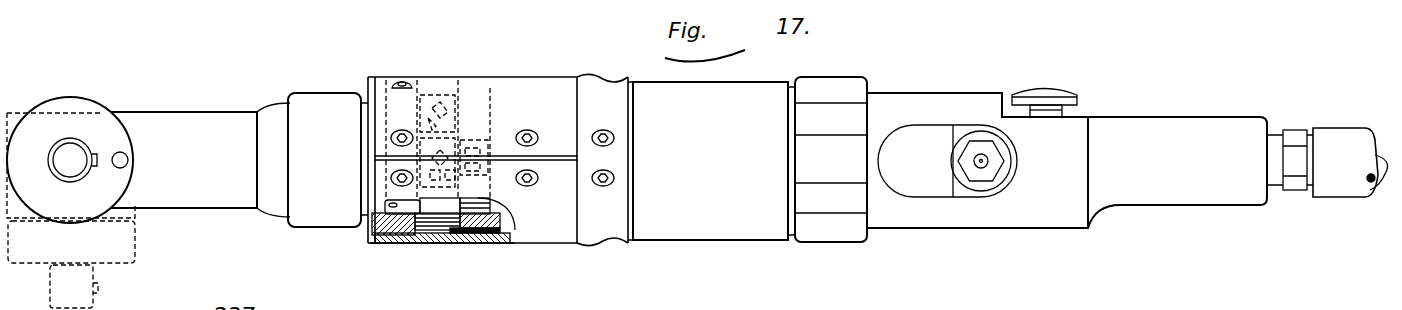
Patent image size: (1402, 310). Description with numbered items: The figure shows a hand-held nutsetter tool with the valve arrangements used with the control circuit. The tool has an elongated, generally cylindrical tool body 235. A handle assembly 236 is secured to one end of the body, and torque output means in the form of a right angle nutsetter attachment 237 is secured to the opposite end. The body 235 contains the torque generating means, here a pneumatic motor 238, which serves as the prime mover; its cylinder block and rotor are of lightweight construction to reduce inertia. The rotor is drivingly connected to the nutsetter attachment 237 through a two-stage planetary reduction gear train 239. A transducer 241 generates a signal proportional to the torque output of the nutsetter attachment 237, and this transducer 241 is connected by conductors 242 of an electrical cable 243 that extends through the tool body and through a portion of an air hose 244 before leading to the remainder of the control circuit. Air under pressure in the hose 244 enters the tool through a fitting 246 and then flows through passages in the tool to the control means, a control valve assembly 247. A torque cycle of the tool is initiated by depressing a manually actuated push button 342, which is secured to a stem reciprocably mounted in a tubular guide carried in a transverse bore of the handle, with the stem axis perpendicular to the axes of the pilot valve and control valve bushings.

The right angle nutsetter attachment 237 is at (169, 108).
The two-stage planetary reduction gear train 239 is at (388, 246).
The transducer 241 is at (440, 246).
The conductors 242 is at (486, 244).
The pneumatic motor 238 is at (735, 188).
The tool body 235 is at (813, 64).
The control valve assembly 247 is at (1010, 228).
The push button 342 is at (1050, 92).
The handle assembly 236 is at (1142, 99).
The fitting 246 is at (1276, 190).
The air hose 244 is at (1368, 104).
The electrical cable 243 is at (1388, 180).